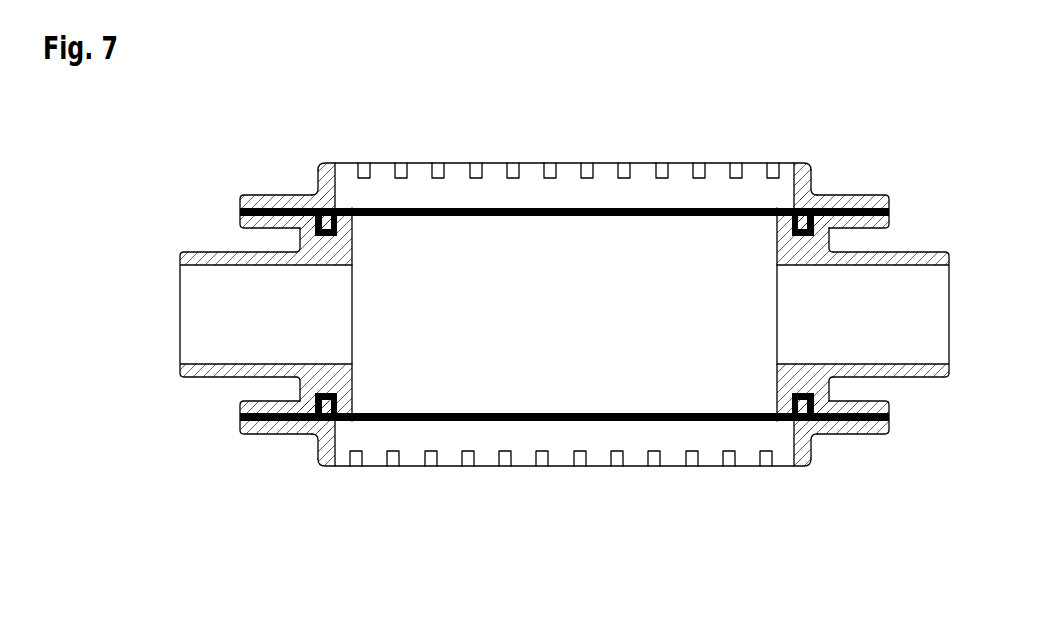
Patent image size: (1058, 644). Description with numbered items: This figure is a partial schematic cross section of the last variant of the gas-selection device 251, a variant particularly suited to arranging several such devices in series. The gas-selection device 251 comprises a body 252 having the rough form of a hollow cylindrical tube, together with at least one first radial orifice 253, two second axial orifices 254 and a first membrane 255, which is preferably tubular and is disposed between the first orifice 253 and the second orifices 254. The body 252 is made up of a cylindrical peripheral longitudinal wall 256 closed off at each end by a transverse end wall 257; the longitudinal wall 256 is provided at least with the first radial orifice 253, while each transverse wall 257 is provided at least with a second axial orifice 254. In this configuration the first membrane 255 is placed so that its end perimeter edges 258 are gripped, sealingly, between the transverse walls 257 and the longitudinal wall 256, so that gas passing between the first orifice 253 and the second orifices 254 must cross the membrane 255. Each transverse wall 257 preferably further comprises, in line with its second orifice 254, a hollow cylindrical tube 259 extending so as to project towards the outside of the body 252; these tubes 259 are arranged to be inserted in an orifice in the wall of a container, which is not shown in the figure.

The gas-selection device 251 is at (418, 535).
The body 252 is at (140, 108).
The first radial orifice 253 is at (628, 440).
The second axial orifice 254 is at (798, 322).
The first membrane 255 is at (730, 421).
The cylindrical peripheral longitudinal wall 256 is at (323, 183).
The transverse end wall 257 is at (260, 223).
The end perimeter edge 258 is at (270, 422).
The hollow cylindrical tube 259 is at (178, 262).